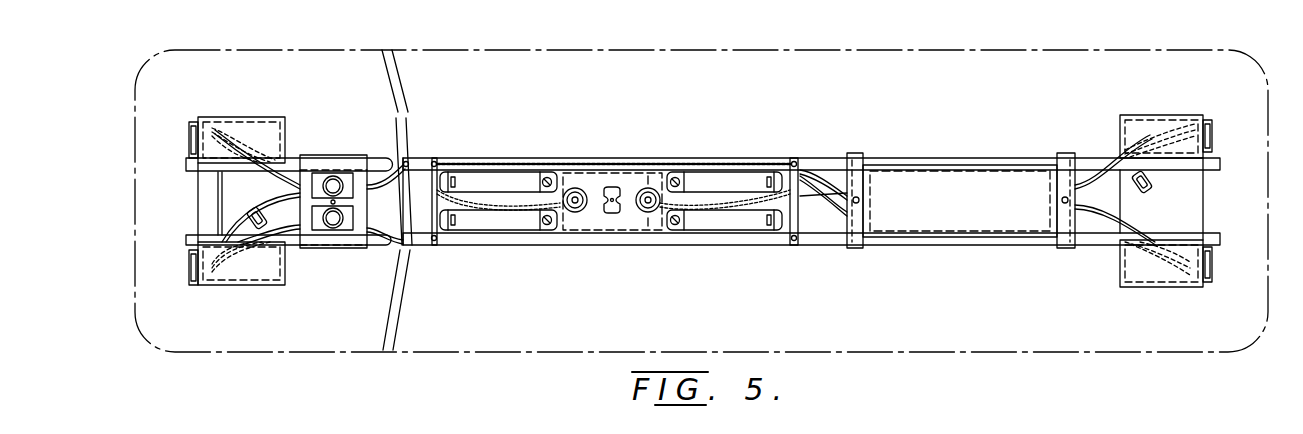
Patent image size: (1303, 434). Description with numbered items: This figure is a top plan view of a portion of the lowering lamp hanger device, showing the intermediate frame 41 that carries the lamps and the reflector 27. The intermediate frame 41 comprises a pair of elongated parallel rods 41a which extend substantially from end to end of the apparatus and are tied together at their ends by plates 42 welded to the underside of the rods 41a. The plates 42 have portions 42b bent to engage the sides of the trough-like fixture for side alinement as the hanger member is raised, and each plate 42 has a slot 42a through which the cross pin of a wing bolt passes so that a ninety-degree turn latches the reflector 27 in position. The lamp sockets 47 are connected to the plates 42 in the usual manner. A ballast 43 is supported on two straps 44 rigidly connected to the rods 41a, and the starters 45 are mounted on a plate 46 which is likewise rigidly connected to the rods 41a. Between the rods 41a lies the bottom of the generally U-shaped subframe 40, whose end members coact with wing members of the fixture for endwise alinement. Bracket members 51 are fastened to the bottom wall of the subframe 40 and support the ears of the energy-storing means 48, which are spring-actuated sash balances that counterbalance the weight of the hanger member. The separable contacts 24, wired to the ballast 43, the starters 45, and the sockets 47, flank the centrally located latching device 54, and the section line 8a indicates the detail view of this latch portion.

The reflector 27 is at (918, 50).
The bent portions of plates 42b is at (252, 116).
The lamp sockets 47 is at (190, 140).
The rods 41a is at (186, 164).
The plates 42 is at (198, 193).
The slot 42a is at (260, 224).
The starters 45 is at (344, 176).
The plate 46 is at (358, 240).
The intermediate frame 41 is at (430, 240).
The subframe 40 is at (441, 228).
The energy-storing means 48 is at (497, 181).
The bracket members 51 is at (549, 228).
The separable contacts 24 is at (582, 186).
The latching device 54 is at (612, 214).
The section line 8a is at (641, 183).
The ballast 43 is at (960, 201).
The straps 44 is at (855, 249).